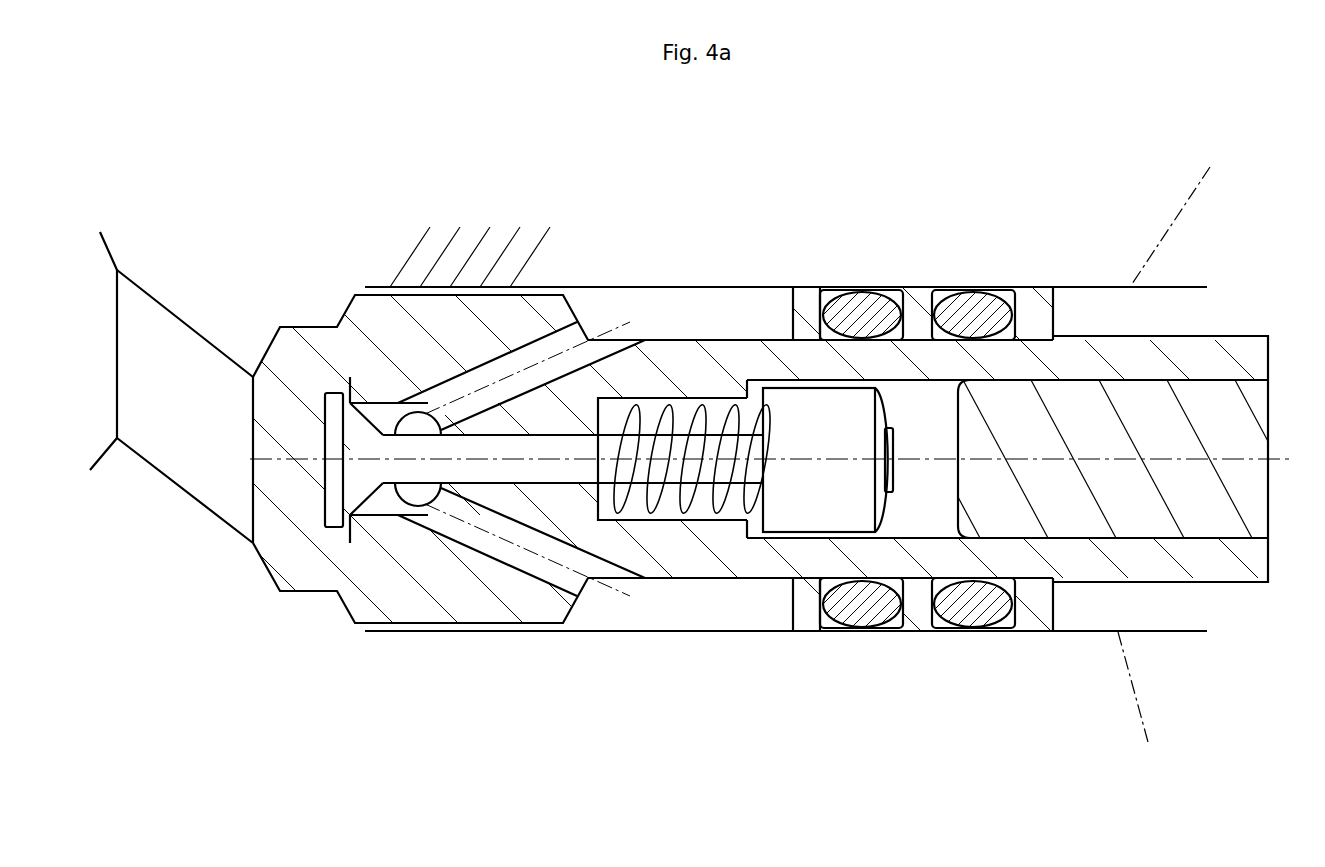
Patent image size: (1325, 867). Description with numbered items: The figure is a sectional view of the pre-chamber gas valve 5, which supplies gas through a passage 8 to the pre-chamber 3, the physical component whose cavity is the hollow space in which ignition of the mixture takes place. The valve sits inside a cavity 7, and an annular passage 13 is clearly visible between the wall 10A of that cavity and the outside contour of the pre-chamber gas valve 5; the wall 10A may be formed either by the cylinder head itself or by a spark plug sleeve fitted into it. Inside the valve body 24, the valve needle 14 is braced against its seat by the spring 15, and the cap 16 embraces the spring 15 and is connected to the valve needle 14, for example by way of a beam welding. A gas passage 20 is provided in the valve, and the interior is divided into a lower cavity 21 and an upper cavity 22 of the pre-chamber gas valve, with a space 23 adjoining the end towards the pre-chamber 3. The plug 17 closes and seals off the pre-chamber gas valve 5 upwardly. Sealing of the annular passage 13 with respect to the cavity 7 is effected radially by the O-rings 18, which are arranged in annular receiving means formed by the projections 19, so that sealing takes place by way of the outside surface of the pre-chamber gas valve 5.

The pre-chamber 3 is at (72, 356).
The pre-chamber gas valve 5 is at (592, 205).
The cavity 7 is at (1212, 308).
The passage 8 is at (197, 444).
The wall of the cavity 10A is at (1177, 451).
The annular passage 13 is at (686, 310).
The valve needle 14 is at (583, 462).
The spring 15 is at (683, 525).
The cap 16 is at (808, 510).
The plug 17 is at (1080, 507).
The O-rings 18 is at (967, 632).
The projections 19 is at (1027, 302).
The gas passage 20 is at (540, 367).
The lower cavity of the pre-chamber gas valve 21 is at (385, 485).
The upper cavity of the pre-chamber gas valve 22 is at (905, 512).
The space 23 is at (277, 507).
The valve body 24 is at (1210, 565).